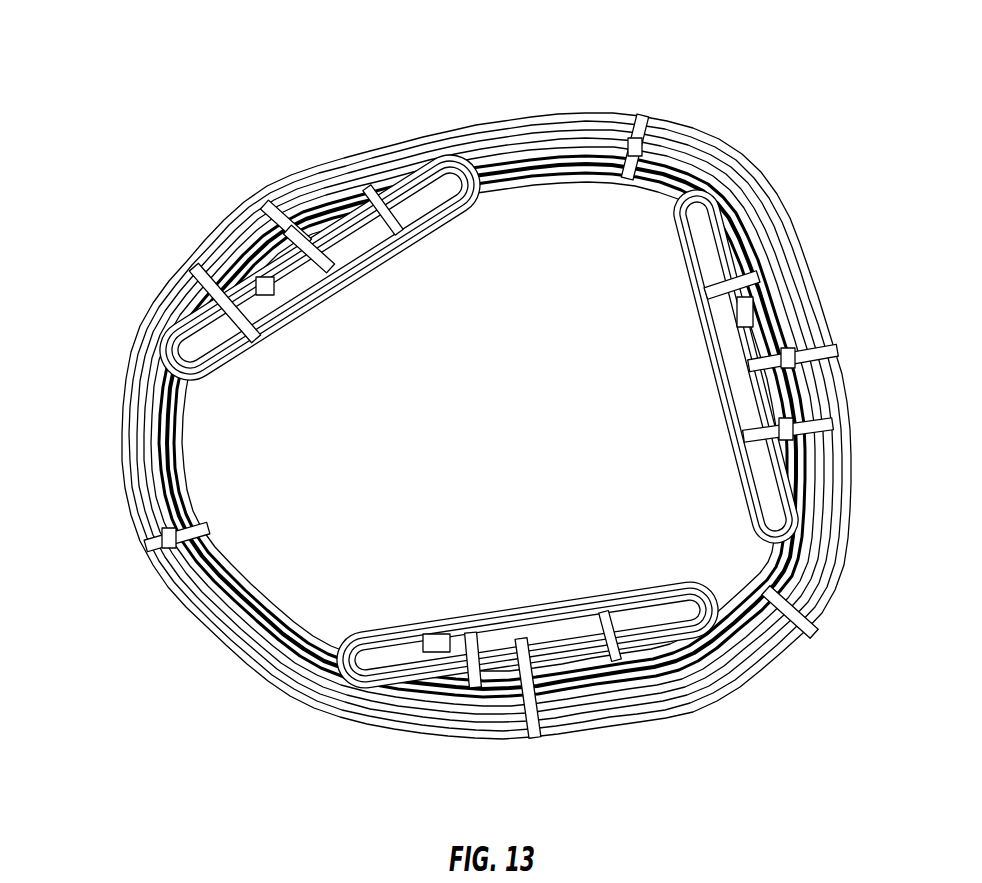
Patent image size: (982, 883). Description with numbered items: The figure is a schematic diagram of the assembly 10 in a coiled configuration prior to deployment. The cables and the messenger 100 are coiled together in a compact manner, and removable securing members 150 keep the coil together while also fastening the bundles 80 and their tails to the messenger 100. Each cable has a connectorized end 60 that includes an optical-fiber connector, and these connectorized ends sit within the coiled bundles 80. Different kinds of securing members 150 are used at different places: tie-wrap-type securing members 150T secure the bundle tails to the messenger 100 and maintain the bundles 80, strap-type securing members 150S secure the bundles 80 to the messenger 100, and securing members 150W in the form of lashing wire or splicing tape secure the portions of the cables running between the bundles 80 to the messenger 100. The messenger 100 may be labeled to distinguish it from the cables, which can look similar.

The assembly 10 is at (226, 77).
The messenger 100 is at (712, 648).
The bundle 80 is at (237, 182).
The connectorized end 60 is at (252, 282).
The removable securing member 150 is at (294, 192).
The strap-type securing member 150S is at (318, 268).
The tie-wrap-type securing member 150T is at (398, 233).
The lashing wire securing member 150W is at (647, 112).